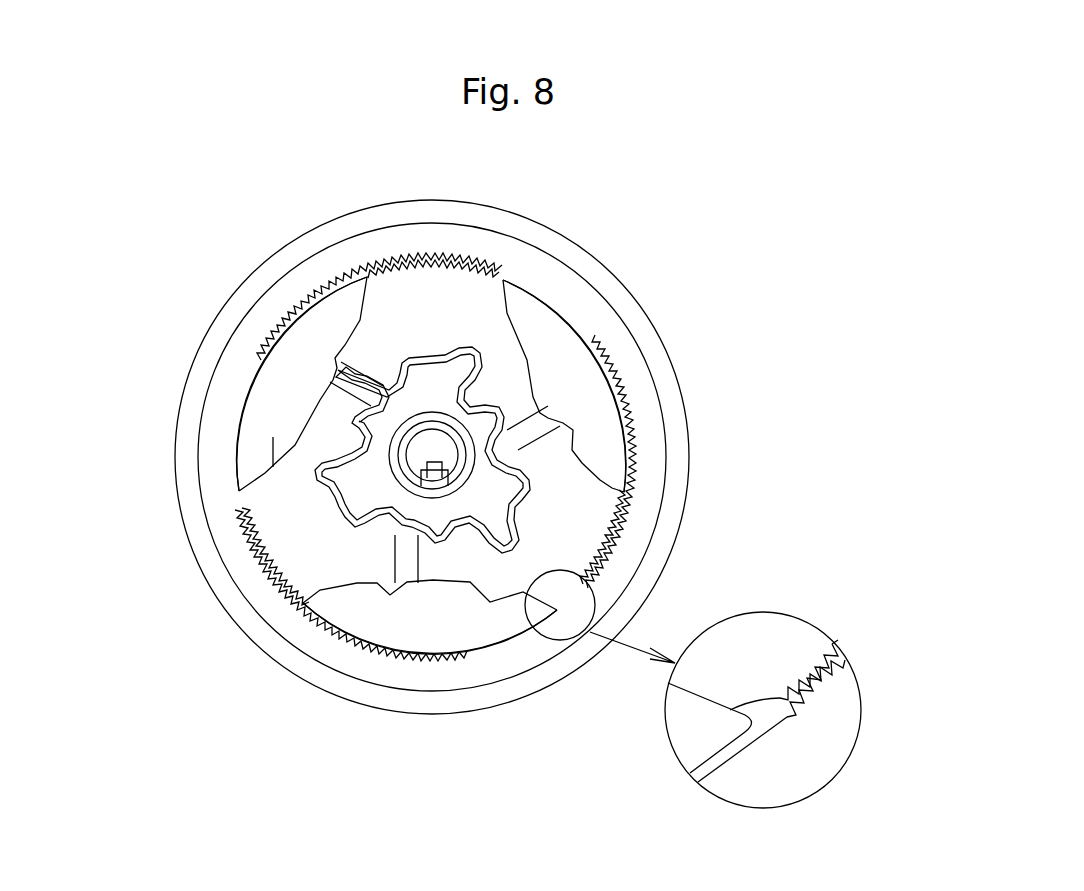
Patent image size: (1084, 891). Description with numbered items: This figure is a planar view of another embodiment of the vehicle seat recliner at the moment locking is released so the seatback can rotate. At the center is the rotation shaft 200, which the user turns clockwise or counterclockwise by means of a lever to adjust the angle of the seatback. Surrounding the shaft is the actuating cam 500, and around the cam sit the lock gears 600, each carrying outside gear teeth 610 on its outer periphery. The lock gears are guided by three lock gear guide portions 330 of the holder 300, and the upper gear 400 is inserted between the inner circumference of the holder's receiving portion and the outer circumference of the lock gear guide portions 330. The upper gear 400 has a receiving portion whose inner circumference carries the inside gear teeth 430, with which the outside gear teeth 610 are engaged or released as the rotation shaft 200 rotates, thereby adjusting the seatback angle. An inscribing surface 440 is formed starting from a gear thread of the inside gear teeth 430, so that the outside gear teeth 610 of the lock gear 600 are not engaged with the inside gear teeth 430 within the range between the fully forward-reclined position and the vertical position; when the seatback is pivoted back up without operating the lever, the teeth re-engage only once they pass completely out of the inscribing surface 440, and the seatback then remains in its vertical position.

The rotation shaft 200 is at (403, 440).
The holder 300 is at (578, 243).
The lock gear guide portion 330 is at (293, 362).
The upper gear 400 is at (585, 294).
The inside gear teeth 430 is at (827, 682).
The inscribing surface 440 is at (743, 752).
The actuating cam 500 is at (480, 412).
The lock gear 600 is at (456, 280).
The outside gear teeth 610 is at (832, 652).